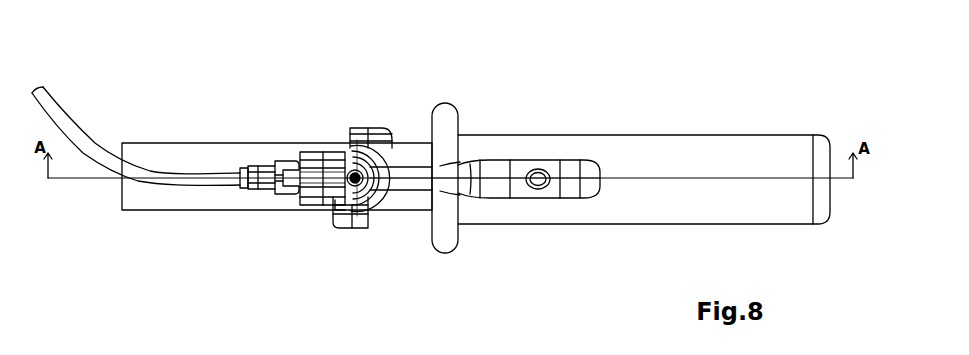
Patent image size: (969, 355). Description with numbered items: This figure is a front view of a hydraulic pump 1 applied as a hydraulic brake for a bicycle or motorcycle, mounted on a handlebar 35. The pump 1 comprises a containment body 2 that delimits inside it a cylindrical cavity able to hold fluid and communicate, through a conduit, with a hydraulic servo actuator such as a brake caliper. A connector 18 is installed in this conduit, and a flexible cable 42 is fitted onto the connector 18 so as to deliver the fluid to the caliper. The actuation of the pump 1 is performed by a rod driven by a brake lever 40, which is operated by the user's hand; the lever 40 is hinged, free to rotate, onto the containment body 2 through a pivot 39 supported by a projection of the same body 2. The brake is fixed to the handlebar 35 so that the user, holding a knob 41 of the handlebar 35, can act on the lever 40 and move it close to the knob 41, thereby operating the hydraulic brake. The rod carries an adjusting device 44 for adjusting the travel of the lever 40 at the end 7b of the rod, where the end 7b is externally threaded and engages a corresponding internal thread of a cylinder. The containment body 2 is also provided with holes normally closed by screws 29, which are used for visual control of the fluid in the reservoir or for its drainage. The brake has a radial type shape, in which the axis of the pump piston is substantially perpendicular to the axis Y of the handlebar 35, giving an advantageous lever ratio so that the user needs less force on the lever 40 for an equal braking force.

The hydraulic pump 1 is at (402, 105).
The containment body 2 is at (399, 135).
The end of rod 7b is at (380, 200).
The connector 18 is at (252, 176).
The screws 29 is at (353, 132).
The handlebar 35 is at (212, 203).
The pivot 39 is at (316, 149).
The lever 40 is at (497, 165).
The knob 41 is at (692, 156).
The flexible cable 42 is at (62, 126).
The adjusting device 44 is at (335, 205).
The axis of handlebar Y is at (747, 180).